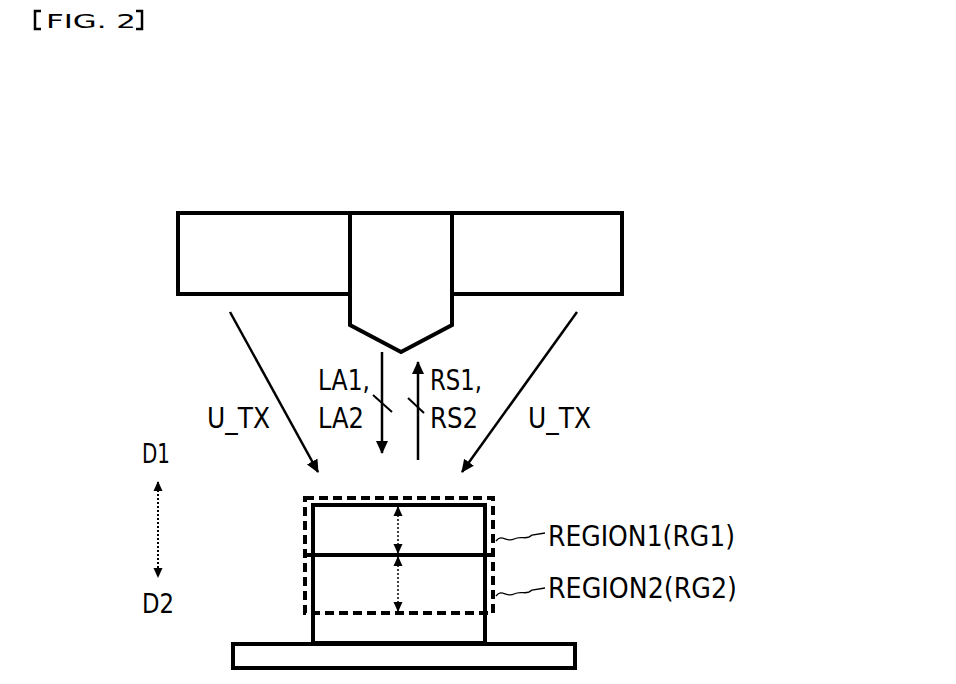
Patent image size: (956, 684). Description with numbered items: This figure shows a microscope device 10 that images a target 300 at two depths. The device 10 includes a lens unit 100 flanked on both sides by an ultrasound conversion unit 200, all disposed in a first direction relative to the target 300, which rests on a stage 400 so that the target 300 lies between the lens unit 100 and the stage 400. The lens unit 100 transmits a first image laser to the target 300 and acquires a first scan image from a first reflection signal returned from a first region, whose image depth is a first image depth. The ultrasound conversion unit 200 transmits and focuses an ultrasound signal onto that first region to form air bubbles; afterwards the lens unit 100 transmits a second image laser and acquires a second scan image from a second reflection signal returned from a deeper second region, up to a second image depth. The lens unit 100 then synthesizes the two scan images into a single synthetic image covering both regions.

The microscope device 10 is at (413, 78).
The lens unit 100 is at (402, 211).
The ultrasound conversion unit 200 is at (178, 244).
The target 300 is at (310, 618).
The stage 400 is at (236, 650).